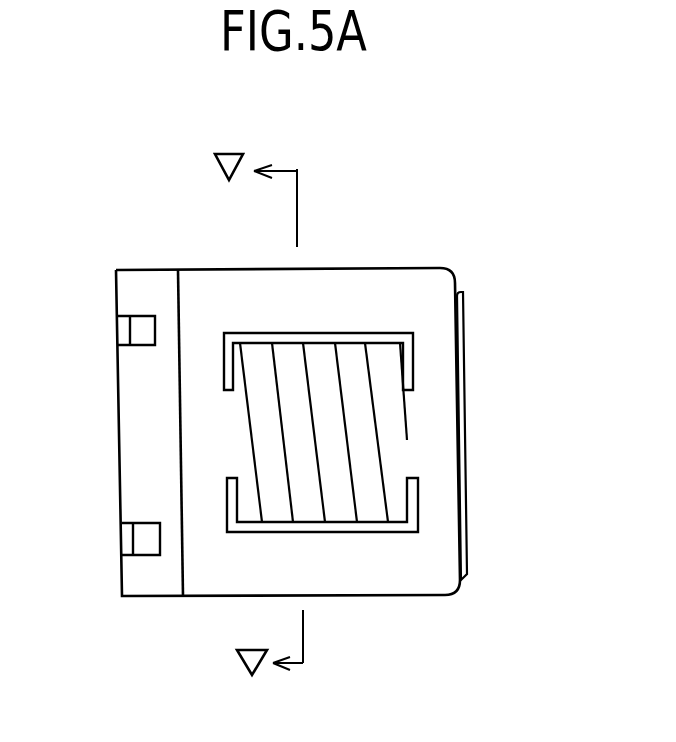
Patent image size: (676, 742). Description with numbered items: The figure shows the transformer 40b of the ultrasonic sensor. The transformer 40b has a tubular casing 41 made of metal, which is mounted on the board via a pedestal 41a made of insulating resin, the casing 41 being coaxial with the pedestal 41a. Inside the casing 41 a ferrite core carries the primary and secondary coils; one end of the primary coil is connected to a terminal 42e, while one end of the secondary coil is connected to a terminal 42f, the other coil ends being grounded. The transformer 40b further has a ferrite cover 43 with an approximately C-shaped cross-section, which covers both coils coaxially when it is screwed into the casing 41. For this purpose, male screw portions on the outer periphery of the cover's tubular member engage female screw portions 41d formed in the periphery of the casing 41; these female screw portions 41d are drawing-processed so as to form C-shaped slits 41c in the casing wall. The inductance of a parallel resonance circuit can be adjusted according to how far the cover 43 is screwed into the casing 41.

The transformer 40b is at (466, 611).
The casing 41 is at (328, 283).
The pedestal 41a is at (142, 268).
The C-shaped slits 41c is at (410, 336).
The female screw portions 41d is at (288, 362).
The terminal 42e is at (145, 332).
The terminal 42f is at (148, 541).
The ferrite cover 43 is at (466, 453).